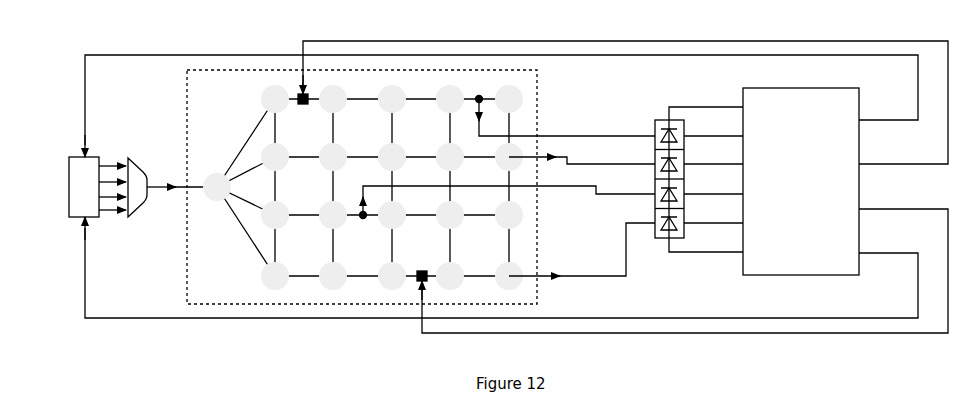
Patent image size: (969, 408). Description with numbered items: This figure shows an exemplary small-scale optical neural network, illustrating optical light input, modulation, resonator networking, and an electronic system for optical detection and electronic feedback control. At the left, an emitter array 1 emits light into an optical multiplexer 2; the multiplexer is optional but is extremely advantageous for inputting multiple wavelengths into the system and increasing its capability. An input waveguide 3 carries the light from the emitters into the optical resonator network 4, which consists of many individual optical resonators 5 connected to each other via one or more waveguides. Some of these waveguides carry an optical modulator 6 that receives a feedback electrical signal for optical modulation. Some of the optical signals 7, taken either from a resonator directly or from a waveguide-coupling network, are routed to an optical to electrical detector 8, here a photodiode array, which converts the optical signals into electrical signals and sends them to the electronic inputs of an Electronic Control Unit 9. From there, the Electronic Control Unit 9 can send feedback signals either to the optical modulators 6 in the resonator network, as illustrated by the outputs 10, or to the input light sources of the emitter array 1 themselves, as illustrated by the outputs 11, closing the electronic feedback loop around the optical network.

The emitter array 1 is at (66, 158).
The optical multiplexer 2 is at (131, 152).
The input waveguide 3 is at (164, 199).
The optical resonator network 4 is at (172, 266).
The optical resonator 5 is at (249, 275).
The optical modulator 6 is at (294, 92).
The optical signal 7 is at (607, 122).
The optical to electrical detector 8 is at (654, 117).
The Electronic Control Unit 9 is at (745, 277).
The outputs 10 is at (924, 169).
The outputs 11 is at (898, 114).